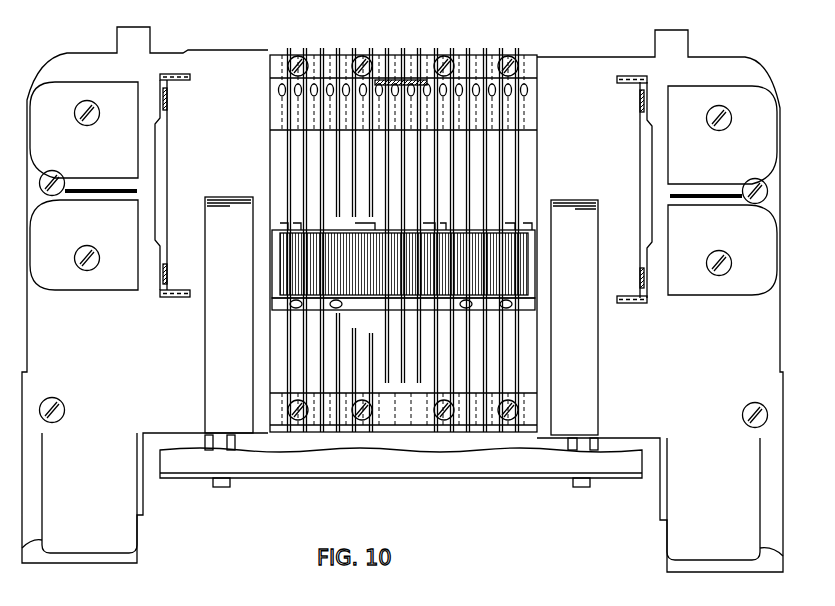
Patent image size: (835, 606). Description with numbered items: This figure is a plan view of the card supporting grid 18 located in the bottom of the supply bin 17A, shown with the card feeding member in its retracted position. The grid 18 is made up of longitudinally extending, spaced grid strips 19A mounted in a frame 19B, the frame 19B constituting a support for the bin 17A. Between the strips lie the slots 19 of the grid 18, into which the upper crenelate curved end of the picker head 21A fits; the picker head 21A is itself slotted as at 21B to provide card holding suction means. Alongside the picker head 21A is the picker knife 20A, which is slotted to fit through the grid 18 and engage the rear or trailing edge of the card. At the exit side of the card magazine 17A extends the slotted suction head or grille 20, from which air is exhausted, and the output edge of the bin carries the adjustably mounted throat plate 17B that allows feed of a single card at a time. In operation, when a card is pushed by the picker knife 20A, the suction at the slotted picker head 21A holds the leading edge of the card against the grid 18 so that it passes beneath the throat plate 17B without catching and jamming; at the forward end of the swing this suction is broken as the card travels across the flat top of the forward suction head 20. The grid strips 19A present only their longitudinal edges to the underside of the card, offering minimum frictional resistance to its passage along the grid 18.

The bin 17A is at (164, 155).
The throat plate 17B is at (413, 79).
The grid 18 is at (523, 200).
The slots 19 is at (475, 175).
The grid strips 19A is at (338, 180).
The frame 19B is at (458, 418).
The suction head 20 is at (527, 110).
The picker knife 20A is at (522, 298).
The picker head 21A is at (278, 287).
The slots of the picker head 21B is at (313, 269).